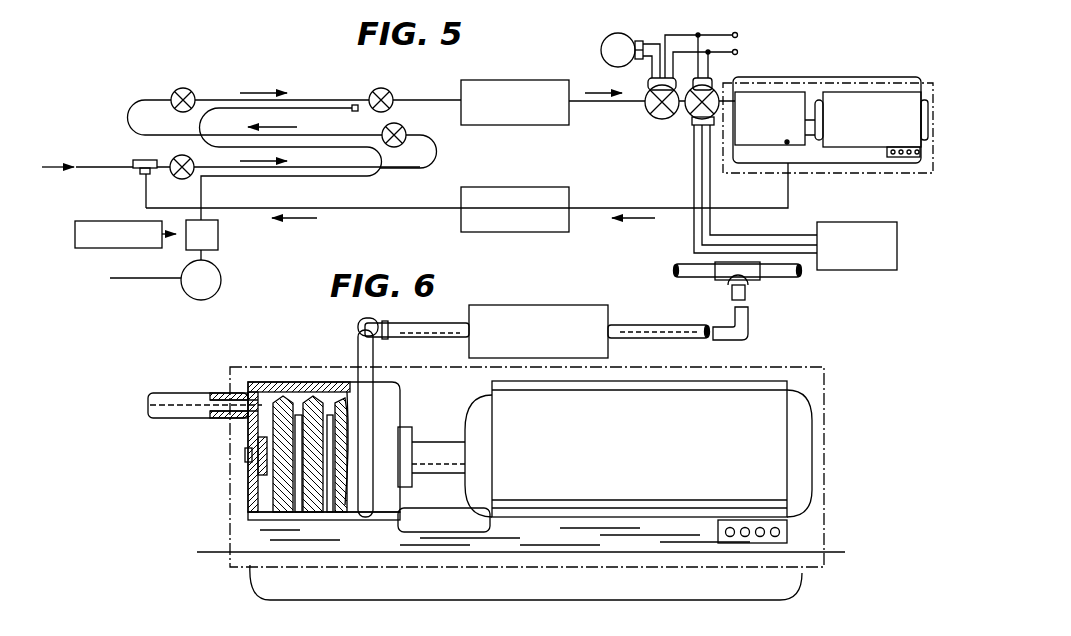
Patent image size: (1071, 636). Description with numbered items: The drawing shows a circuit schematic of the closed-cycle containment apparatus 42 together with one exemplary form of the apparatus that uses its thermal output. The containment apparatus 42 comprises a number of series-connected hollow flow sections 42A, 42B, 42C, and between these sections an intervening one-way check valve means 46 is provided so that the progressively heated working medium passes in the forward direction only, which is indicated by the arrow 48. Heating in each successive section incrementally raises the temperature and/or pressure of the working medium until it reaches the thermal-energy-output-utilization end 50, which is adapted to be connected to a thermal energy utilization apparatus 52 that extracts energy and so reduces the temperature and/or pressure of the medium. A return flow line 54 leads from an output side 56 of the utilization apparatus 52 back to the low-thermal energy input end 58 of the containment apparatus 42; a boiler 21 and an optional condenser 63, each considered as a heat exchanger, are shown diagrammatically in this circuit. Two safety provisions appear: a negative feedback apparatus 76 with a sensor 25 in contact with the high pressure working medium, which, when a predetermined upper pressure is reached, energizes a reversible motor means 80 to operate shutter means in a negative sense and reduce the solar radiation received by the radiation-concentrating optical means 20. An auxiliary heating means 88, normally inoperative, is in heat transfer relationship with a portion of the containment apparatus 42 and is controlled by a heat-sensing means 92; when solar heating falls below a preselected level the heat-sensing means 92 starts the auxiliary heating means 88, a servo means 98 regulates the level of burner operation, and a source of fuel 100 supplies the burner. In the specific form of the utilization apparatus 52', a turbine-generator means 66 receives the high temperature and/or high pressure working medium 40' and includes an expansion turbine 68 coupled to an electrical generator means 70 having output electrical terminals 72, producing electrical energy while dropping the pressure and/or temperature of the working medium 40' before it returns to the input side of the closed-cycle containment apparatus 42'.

In FIG. 5, the closed-cycle containment apparatus 42 is at (231, 114).
In FIG. 5, the hollow flow section 42A is at (410, 172).
In FIG. 5, the hollow flow section 42B is at (316, 130).
In FIG. 5, the hollow flow section 42C is at (160, 99).
In FIG. 5, the one-way check valve means 46 is at (190, 90).
In FIG. 5, the arrow 48 is at (264, 92).
In FIG. 5, the low-thermal energy input end 58 is at (140, 176).
In FIG. 6, the low-thermal energy input end 58 is at (746, 292).
In FIG. 5, the auxiliary heating means 88 is at (379, 181).
In FIG. 5, the boiler 21 is at (527, 126).
In FIG. 5, the condenser 63 is at (540, 233).
In FIG. 6, the condenser 63 is at (556, 306).
In FIG. 5, the return flow line 54 is at (745, 209).
In FIG. 6, the return flow line 54 is at (358, 335).
In FIG. 5, the sensor 25 is at (648, 121).
In FIG. 5, the heat-sensing means 92 is at (721, 77).
In FIG. 5, the negative feedback apparatus 76 is at (650, 30).
In FIG. 5, the motor means 80 is at (602, 46).
In FIG. 5, the turbine-generator means 66 is at (827, 77).
In FIG. 6, the turbine-generator means 66 is at (533, 600).
In FIG. 5, the thermal energy utilization apparatus 52 is at (792, 133).
In FIG. 5, the expansion turbine 68 is at (775, 118).
In FIG. 6, the expansion turbine 68 is at (352, 512).
In FIG. 5, the electrical generator means 70 is at (871, 119).
In FIG. 6, the electrical generator means 70 is at (638, 449).
In FIG. 5, the output electrical terminals 72 is at (900, 158).
In FIG. 6, the output electrical terminals 72 is at (730, 543).
In FIG. 5, the output side 56 is at (787, 142).
In FIG. 6, the output side 56 is at (396, 514).
In FIG. 5, the thermal-energy-output-utilization end 50 is at (694, 135).
In FIG. 5, the servo means 98 is at (226, 250).
In FIG. 5, the source of fuel 100 is at (125, 234).
In FIG. 6, the closed-cycle containment apparatus 42' is at (493, 353).
In FIG. 6, the working medium 40' is at (175, 440).
In FIG. 6, the thermal-energy-utilization apparatus 52' is at (478, 467).
In FIG. 6, the radiation-concentrating optical means 20 is at (526, 600).